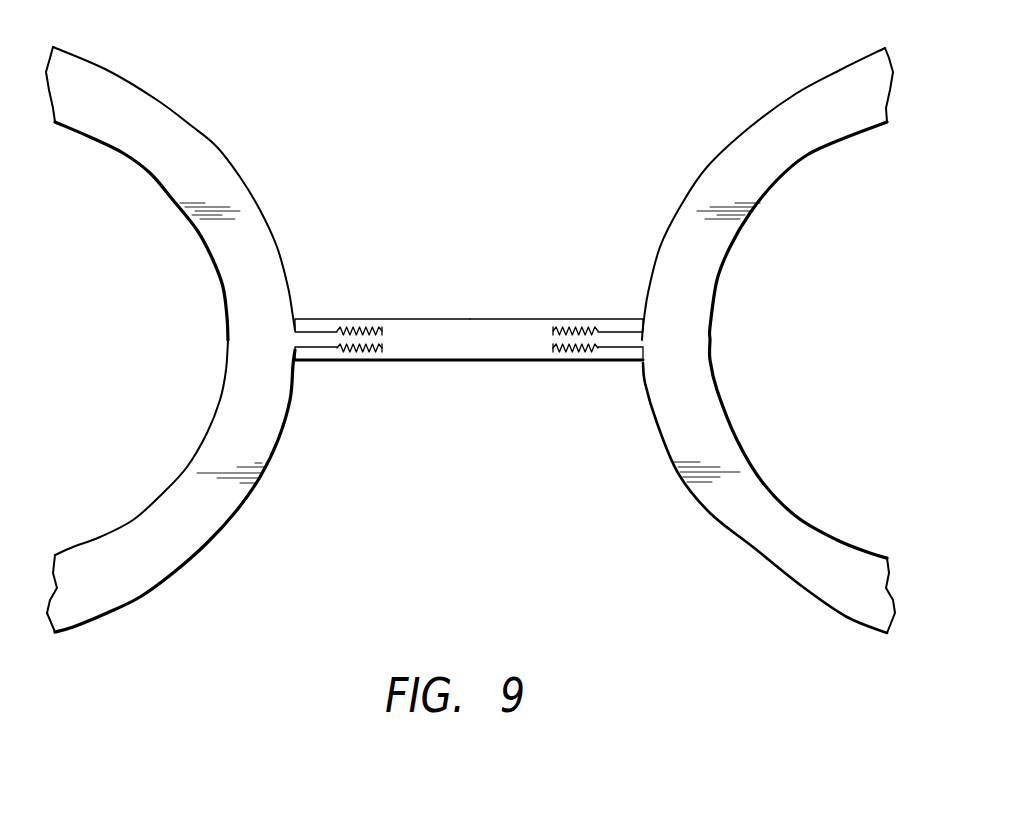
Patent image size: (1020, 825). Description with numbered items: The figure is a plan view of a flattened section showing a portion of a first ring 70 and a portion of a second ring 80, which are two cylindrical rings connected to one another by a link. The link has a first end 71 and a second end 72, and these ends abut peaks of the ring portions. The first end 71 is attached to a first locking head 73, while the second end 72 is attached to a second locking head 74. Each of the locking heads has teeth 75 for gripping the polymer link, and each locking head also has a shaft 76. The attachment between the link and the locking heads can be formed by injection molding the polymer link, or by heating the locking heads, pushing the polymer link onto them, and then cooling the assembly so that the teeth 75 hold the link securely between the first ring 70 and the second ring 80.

The first ring 70 is at (212, 142).
The second ring 80 is at (798, 90).
The first end 71 is at (318, 318).
The second end 72 is at (578, 320).
The first locking head 73 is at (383, 340).
The second locking head 74 is at (553, 338).
The teeth 75 is at (360, 357).
The shaft 76 is at (310, 348).